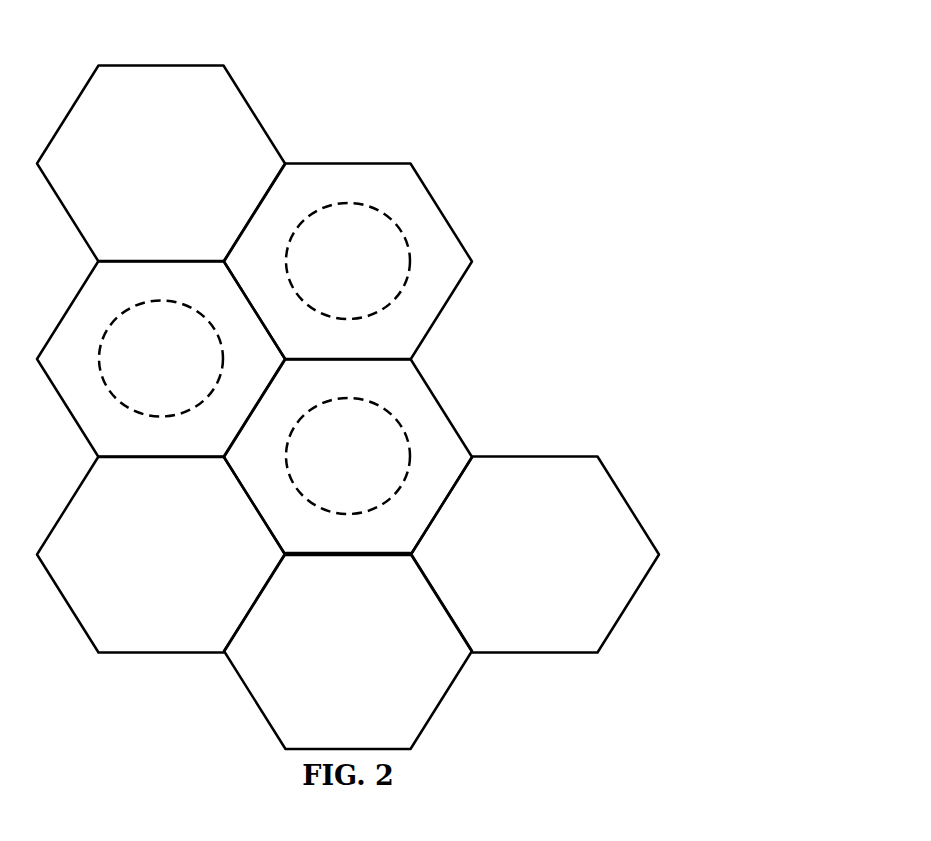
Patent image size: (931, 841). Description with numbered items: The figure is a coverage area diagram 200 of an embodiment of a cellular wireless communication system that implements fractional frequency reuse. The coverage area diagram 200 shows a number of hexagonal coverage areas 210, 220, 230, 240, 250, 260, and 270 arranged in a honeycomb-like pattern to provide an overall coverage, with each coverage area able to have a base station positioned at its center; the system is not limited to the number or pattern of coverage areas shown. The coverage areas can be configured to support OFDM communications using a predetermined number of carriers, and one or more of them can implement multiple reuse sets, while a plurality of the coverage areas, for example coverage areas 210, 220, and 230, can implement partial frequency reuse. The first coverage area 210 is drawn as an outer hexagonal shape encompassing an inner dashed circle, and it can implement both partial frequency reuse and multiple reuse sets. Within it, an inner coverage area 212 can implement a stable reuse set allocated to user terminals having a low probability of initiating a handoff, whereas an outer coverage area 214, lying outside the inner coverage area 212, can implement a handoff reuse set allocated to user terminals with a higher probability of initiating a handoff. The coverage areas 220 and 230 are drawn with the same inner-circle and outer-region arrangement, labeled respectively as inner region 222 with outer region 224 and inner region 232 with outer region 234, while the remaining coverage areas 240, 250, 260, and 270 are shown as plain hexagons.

The coverage area diagram 200 is at (553, 112).
The first coverage area 210 is at (68, 304).
The inner coverage area 212 is at (179, 372).
The outer coverage area 214 is at (179, 447).
The coverage area 220 is at (350, 164).
The inner region of second cell 222 is at (367, 274).
The outer region of second cell 224 is at (367, 349).
The coverage area 230 is at (440, 403).
The inner region of third cell 232 is at (367, 469).
The outer region of third cell 234 is at (367, 544).
The coverage area 240 is at (68, 500).
The coverage area 250 is at (445, 700).
The coverage area 260 is at (543, 457).
The coverage area 270 is at (164, 65).